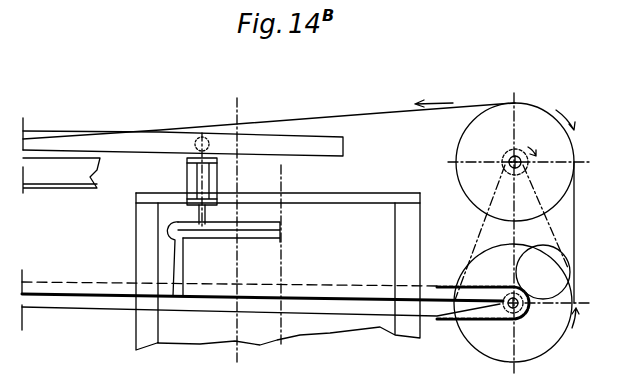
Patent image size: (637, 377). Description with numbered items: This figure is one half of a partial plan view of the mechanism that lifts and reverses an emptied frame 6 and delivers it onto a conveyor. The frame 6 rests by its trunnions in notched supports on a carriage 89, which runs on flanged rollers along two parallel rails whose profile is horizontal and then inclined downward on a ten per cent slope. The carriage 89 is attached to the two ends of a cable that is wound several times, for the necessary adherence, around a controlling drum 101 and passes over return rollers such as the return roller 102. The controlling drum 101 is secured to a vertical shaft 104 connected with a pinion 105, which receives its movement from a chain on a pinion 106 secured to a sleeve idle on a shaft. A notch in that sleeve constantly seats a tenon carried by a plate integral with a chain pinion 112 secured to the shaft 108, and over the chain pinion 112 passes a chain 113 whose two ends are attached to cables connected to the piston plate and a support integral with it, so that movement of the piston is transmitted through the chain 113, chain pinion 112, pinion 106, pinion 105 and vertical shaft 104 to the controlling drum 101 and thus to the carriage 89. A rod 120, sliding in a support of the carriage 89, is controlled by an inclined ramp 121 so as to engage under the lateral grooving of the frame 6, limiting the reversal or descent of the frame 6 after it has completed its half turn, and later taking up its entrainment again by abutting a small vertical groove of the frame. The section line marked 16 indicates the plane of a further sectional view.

The inclined ramp 121 is at (163, 141).
The section line 16 is at (226, 117).
The rod 120 is at (203, 173).
The carriage 89 is at (143, 247).
The frame 6 is at (183, 270).
The controlling drum 101 is at (463, 138).
The vertical shaft 104 is at (517, 156).
The pinion 105 is at (508, 155).
The return roller 102 is at (546, 250).
The pinion 106 is at (553, 343).
The chain 113 is at (440, 287).
The chain pinion 112 is at (478, 301).
The shaft 108 is at (497, 312).